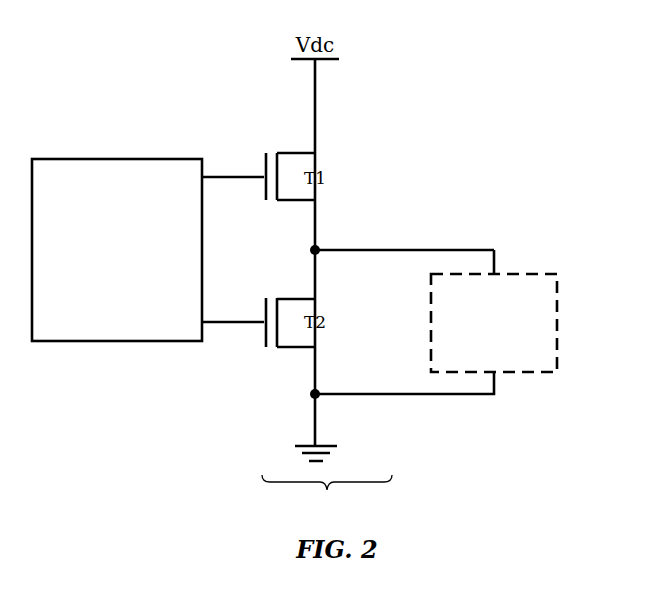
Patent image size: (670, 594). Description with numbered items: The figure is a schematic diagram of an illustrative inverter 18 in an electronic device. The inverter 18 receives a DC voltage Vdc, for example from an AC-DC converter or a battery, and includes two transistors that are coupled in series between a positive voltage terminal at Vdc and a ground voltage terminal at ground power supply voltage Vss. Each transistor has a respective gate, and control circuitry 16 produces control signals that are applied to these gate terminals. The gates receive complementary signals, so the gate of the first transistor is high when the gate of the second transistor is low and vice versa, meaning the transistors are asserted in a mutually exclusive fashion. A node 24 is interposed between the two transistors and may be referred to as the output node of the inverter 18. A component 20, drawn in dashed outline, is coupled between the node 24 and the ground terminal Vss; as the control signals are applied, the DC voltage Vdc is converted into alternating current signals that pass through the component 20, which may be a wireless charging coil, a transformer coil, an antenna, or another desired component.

The control circuitry 16 is at (114, 158).
The node 24 is at (318, 247).
The component 20 is at (557, 320).
The inverter 18 is at (327, 455).